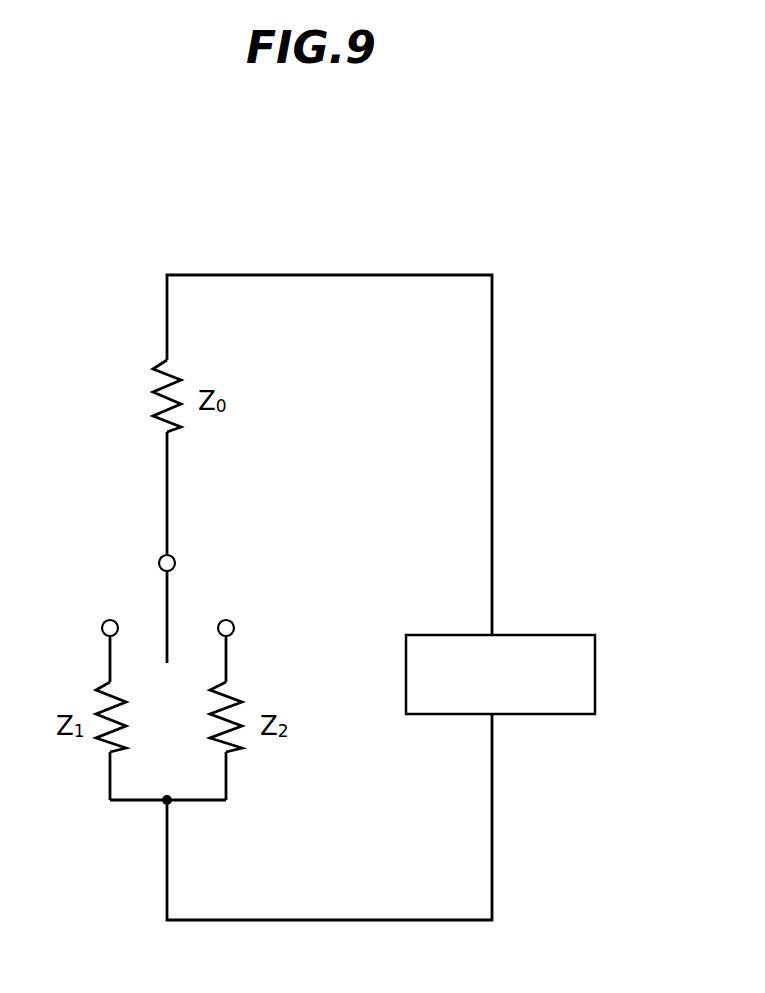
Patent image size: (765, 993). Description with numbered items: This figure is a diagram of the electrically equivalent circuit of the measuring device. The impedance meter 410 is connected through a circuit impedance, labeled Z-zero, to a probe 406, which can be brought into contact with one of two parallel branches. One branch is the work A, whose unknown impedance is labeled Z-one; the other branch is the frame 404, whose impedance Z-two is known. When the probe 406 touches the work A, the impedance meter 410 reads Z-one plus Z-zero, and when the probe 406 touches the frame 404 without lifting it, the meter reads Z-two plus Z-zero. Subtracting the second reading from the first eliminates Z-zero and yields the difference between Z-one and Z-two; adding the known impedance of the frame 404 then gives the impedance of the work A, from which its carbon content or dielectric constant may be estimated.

The frame 404 is at (233, 624).
The probe 406 is at (167, 608).
The impedance meter 410 is at (541, 633).
The work A is at (104, 622).